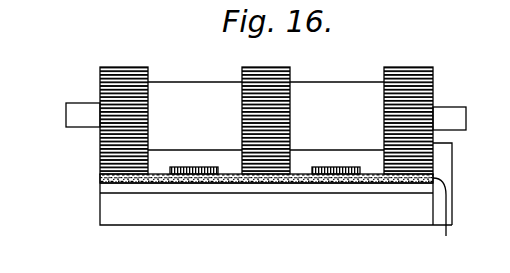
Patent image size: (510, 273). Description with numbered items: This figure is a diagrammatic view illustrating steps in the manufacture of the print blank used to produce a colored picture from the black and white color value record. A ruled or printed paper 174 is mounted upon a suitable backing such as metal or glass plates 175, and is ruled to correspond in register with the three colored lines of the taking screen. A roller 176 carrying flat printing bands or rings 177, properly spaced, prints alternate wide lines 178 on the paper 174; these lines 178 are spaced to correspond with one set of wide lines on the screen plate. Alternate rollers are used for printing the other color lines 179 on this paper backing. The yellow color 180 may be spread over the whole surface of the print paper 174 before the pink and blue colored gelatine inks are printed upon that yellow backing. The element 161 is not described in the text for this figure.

The conductive strip 161 is at (227, 180).
The ruled or printed paper 174 is at (315, 195).
The backing plates 175 is at (247, 226).
The roller 176 is at (193, 90).
The flat printing bands or rings 177 is at (143, 67).
The alternate wide lines 178 is at (100, 173).
The other color lines 179 is at (186, 166).
The yellow color 180 is at (442, 198).